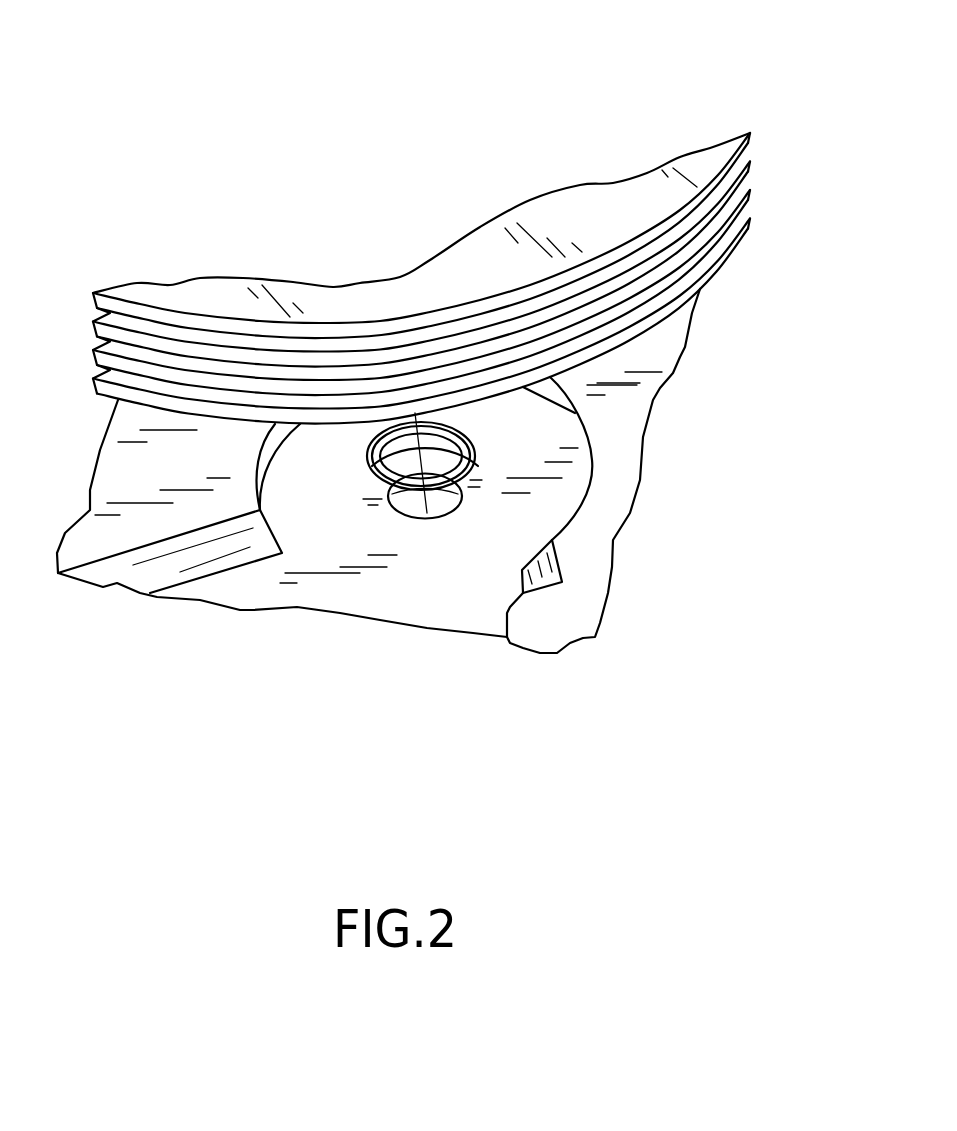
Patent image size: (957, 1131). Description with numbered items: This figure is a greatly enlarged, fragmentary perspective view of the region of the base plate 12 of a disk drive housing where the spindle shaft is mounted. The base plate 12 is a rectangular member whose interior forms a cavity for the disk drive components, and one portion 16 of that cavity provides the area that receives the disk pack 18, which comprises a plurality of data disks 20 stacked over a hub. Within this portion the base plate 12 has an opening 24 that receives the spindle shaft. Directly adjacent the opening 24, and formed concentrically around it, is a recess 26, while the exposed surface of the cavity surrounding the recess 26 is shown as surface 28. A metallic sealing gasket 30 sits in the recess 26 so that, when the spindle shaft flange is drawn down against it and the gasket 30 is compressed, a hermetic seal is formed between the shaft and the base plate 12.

The base plate 12 is at (365, 668).
The portion 16 is at (155, 523).
The disk pack 18 is at (486, 212).
The data disks 20 is at (678, 243).
The opening 24 is at (442, 503).
The recess 26 is at (483, 493).
The surface 28 is at (303, 483).
The metallic sealing gasket 30 is at (473, 440).